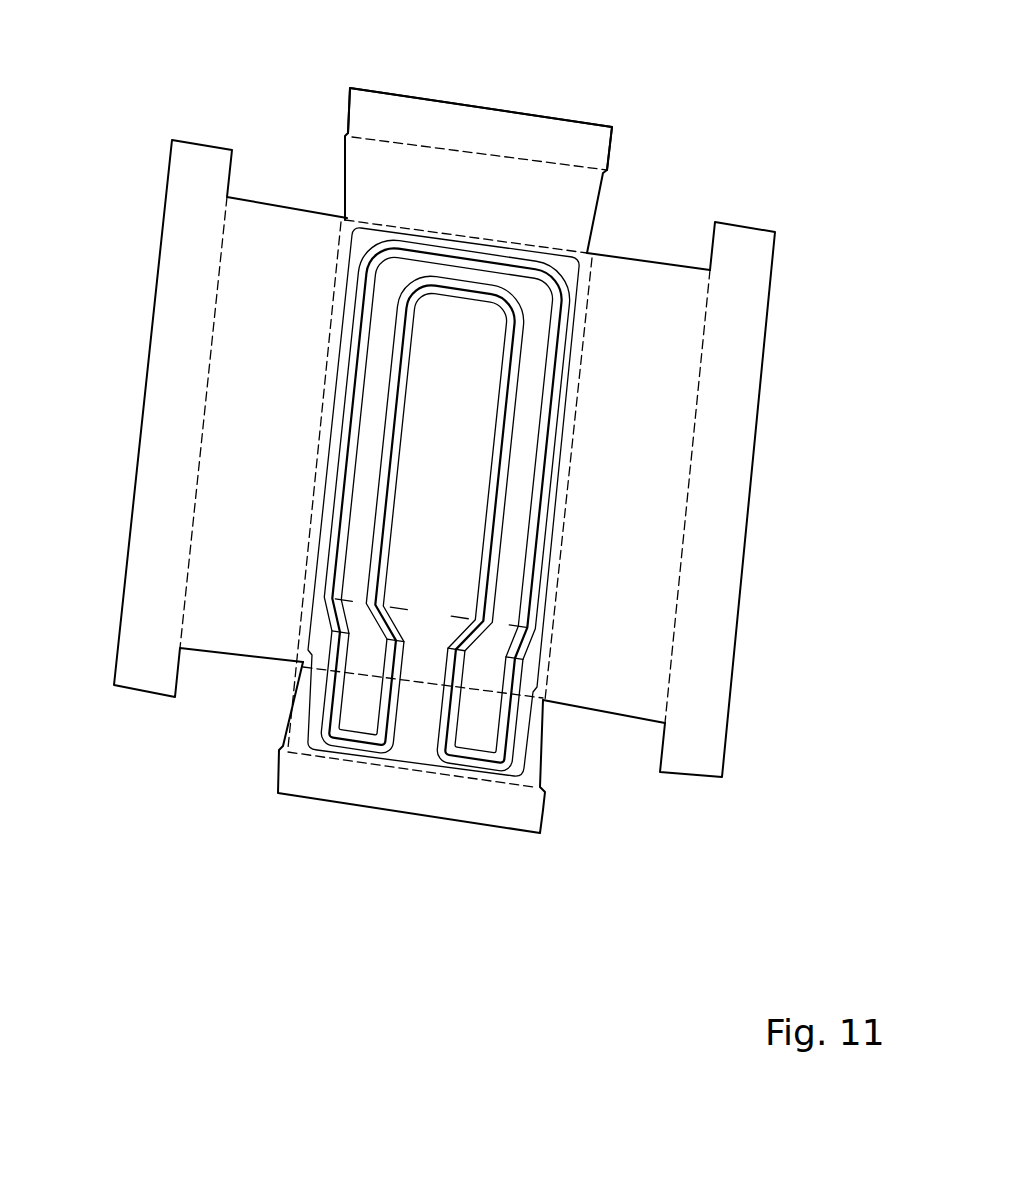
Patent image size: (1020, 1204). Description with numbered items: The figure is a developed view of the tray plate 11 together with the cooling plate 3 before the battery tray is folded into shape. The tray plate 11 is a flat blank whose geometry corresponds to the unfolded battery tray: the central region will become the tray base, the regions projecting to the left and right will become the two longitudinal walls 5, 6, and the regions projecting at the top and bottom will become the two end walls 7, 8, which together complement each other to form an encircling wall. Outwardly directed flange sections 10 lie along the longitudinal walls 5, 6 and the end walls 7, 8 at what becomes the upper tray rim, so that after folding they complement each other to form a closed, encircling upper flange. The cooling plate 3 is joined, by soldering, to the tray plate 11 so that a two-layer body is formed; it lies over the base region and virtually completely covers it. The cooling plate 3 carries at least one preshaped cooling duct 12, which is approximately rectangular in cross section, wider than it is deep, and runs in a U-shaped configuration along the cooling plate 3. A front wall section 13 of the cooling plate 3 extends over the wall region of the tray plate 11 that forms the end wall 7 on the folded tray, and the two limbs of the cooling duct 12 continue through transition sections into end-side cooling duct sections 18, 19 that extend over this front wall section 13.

The cooling plate 3 is at (293, 712).
The longitudinal wall 5 is at (643, 473).
The longitudinal wall 6 is at (217, 505).
The end wall 7 is at (533, 757).
The end wall 8 is at (423, 178).
The flange section 10 is at (525, 128).
The tray plate 11 is at (686, 218).
The cooling duct 12 is at (531, 532).
The front wall section 13 is at (420, 755).
The end-side cooling duct section 18 is at (357, 712).
The end-side cooling duct section 19 is at (475, 735).